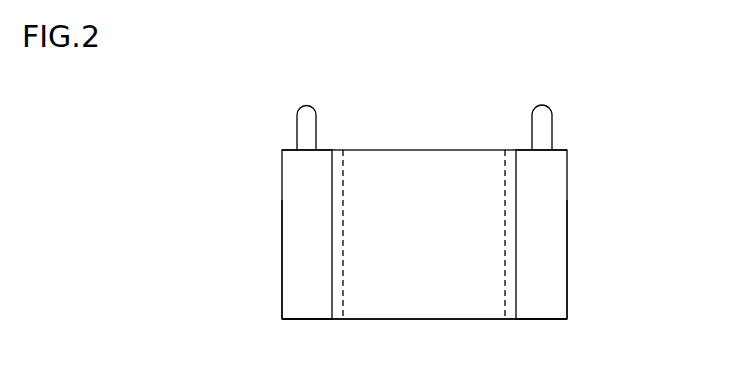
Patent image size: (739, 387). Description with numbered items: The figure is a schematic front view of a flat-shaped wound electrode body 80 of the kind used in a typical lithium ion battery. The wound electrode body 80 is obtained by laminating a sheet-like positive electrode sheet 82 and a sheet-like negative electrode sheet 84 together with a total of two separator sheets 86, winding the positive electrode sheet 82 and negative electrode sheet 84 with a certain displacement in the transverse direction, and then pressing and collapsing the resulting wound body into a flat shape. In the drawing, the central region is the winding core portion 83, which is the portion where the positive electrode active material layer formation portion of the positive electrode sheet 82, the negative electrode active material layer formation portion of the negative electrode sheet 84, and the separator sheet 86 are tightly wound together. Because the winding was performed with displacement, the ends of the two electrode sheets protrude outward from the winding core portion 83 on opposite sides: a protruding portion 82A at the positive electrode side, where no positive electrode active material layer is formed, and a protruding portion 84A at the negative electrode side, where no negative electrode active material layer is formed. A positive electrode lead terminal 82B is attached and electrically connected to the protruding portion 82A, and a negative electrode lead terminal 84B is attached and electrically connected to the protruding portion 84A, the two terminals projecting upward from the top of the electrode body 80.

The wound electrode body 80 is at (460, 138).
The positive electrode sheet 82 is at (569, 190).
The protruding portion at the positive electrode side 82A is at (558, 264).
The positive electrode lead terminal 82B is at (552, 122).
The winding core portion 83 is at (441, 316).
The negative electrode sheet 84 is at (280, 190).
The protruding portion at the negative electrode side 84A is at (288, 265).
The negative electrode lead terminal 84B is at (318, 122).
The separator sheet 86 is at (387, 157).